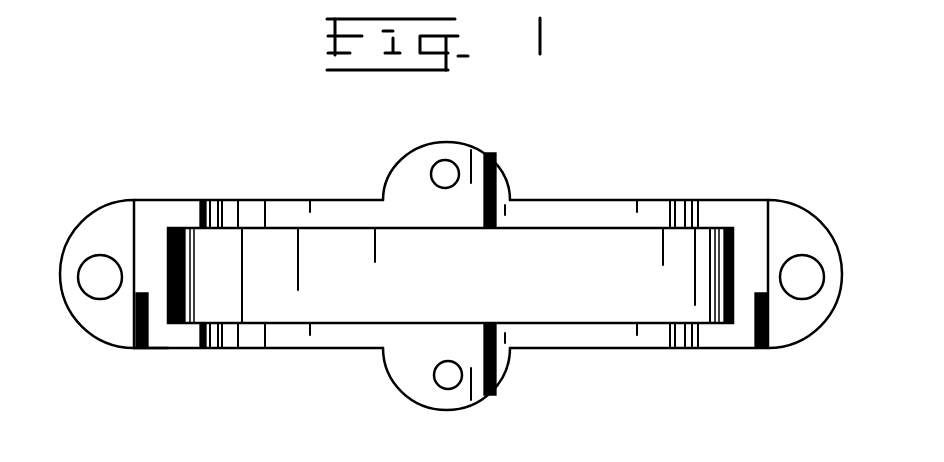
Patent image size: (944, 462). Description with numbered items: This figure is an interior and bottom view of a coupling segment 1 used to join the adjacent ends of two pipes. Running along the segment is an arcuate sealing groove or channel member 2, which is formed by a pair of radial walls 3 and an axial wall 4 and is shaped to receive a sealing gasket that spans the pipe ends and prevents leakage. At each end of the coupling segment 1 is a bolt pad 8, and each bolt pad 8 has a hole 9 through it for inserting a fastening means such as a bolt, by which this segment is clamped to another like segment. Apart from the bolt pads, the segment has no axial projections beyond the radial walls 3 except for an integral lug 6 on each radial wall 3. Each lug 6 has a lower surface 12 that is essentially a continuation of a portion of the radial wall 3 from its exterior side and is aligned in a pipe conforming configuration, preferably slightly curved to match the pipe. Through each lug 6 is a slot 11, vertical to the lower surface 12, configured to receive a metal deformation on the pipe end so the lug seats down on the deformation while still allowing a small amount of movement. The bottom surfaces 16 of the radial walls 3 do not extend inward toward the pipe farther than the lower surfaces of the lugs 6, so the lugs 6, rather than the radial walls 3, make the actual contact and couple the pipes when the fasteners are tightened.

The coupling segment 1 is at (683, 389).
The arcuate sealing groove 2 is at (555, 258).
The radial wall 3 is at (258, 200).
The axial wall 4 is at (255, 302).
The lug 6 is at (485, 153).
The bolt pad 8 is at (78, 246).
The hole 9 is at (90, 287).
The slot 11 is at (442, 378).
The lower surface 12 is at (402, 180).
The bottom surface 16 is at (173, 340).